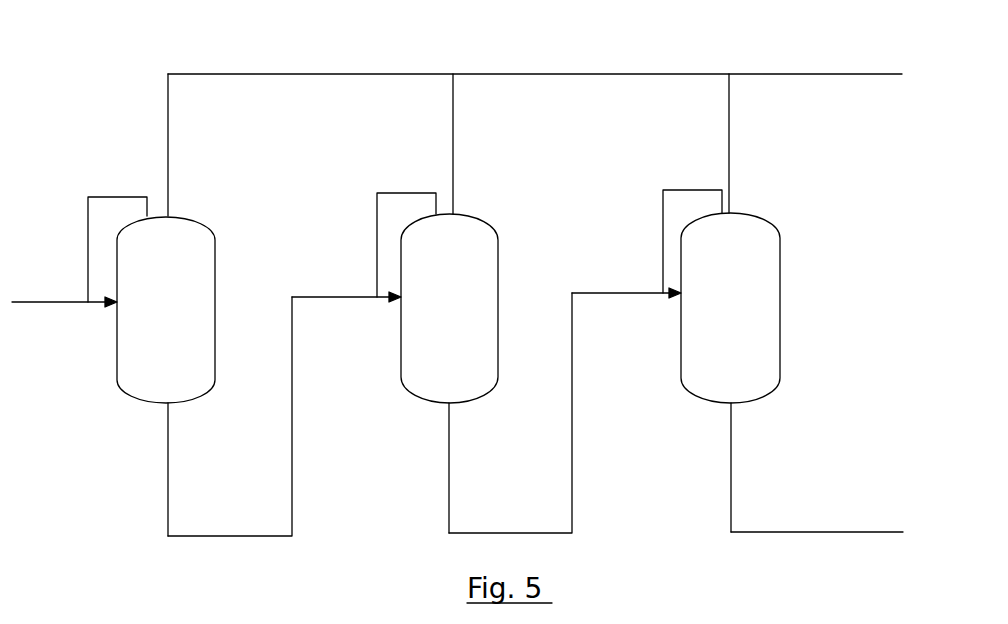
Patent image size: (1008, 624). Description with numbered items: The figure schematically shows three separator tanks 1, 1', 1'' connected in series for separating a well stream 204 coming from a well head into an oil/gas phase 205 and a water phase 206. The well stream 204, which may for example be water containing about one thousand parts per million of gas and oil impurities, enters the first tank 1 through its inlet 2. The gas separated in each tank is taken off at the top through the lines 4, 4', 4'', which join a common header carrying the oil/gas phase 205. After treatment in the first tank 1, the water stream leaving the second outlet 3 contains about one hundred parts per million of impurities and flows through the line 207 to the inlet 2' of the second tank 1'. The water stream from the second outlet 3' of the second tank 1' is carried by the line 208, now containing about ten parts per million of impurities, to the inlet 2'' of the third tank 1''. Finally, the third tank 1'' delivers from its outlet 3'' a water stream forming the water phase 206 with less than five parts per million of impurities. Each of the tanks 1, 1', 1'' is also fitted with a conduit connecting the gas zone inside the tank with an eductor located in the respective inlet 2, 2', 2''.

The tank 1 is at (196, 290).
The tank 1' is at (487, 287).
The tank 1'' is at (776, 299).
The inlet 2 is at (64, 277).
The inlet 2' is at (346, 271).
The inlet 2'' is at (626, 266).
The second outlet 3 is at (195, 469).
The second outlet 3' is at (477, 468).
The outlet 3'' is at (760, 467).
The gas supply line to reactor 4 is at (186, 145).
The gas supply line to second reactor 4' is at (475, 144).
The gas supply line to third reactor 4'' is at (752, 143).
The well stream 204 is at (53, 303).
The oil/gas phase 205 is at (818, 74).
The water phase 206 is at (797, 532).
The line 207 is at (210, 536).
The line 208 is at (515, 533).